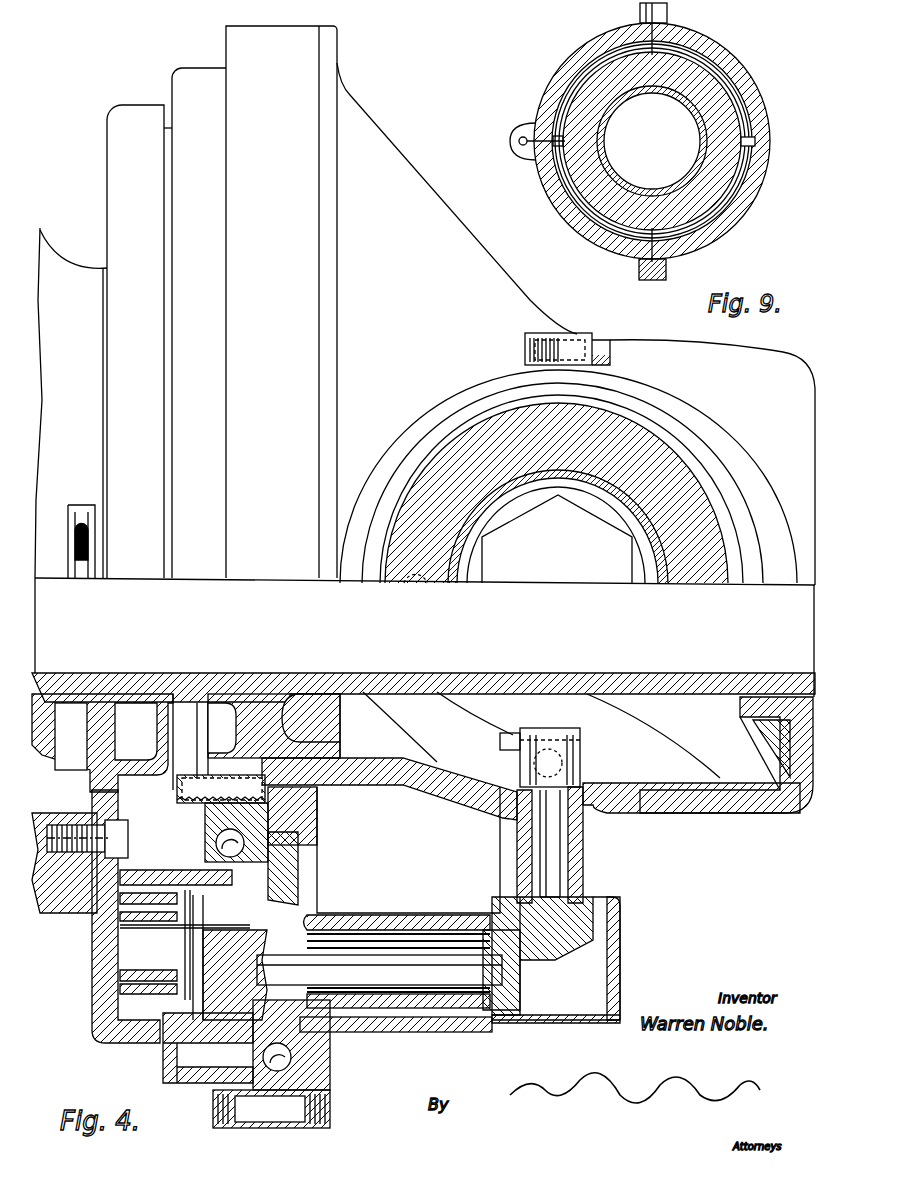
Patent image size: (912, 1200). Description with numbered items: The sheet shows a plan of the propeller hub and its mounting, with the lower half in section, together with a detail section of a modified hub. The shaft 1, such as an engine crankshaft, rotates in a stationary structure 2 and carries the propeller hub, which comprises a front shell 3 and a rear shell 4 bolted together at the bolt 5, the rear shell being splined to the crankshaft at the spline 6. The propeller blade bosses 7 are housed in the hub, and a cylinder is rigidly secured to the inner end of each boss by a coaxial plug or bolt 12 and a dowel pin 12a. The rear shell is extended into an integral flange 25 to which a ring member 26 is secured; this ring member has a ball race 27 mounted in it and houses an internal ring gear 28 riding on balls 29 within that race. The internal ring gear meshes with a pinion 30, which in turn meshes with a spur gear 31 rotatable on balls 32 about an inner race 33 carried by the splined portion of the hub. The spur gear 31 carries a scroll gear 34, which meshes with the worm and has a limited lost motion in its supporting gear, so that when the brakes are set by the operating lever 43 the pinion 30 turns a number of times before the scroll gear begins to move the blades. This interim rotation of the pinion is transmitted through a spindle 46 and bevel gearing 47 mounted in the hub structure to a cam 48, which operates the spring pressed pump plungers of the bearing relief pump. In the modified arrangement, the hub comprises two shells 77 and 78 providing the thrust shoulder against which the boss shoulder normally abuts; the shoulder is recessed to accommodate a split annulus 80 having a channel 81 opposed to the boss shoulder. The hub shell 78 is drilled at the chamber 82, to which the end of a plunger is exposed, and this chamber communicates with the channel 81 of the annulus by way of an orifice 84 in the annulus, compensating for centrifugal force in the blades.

In FIG. 4, the shaft 1 is at (660, 690).
In FIG. 4, the stationary structure 2 is at (120, 205).
In FIG. 4, the front shell 3 is at (655, 392).
In FIG. 4, the rear shell 4 is at (404, 446).
In FIG. 4, the bolt 5 is at (593, 338).
In FIG. 4, the spline 6 is at (204, 775).
In FIG. 4, the propeller blade bosses 7 is at (708, 580).
In FIG. 9, the propeller blade bosses 7 is at (700, 100).
In FIG. 4, the coaxial plug or bolt 12 is at (622, 520).
In FIG. 4, the dowel pin 12a is at (415, 583).
In FIG. 4, the integral flange 25 is at (334, 51).
In FIG. 4, the ring member 26 is at (240, 57).
In FIG. 4, the ball race 27 is at (331, 1088).
In FIG. 4, the internal ring gear 28 is at (224, 1045).
In FIG. 4, the balls 29 is at (292, 1058).
In FIG. 4, the pinion 30 is at (247, 927).
In FIG. 4, the spur gear 31 is at (250, 907).
In FIG. 4, the balls 32 is at (245, 843).
In FIG. 4, the inner race 33 is at (247, 823).
In FIG. 4, the scroll gear 34 is at (270, 872).
In FIG. 4, the operating lever 43 is at (80, 568).
In FIG. 4, the spindle 46 is at (405, 975).
In FIG. 4, the bevel gearing 47 is at (536, 965).
In FIG. 4, the cam 48 is at (585, 757).
In FIG. 9, the hub shell 77 is at (760, 110).
In FIG. 9, the hub shell 78 is at (558, 78).
In FIG. 9, the split annulus 80 is at (757, 136).
In FIG. 9, the channel 81 is at (551, 199).
In FIG. 9, the chamber 82 is at (520, 158).
In FIG. 9, the orifice 84 is at (535, 168).